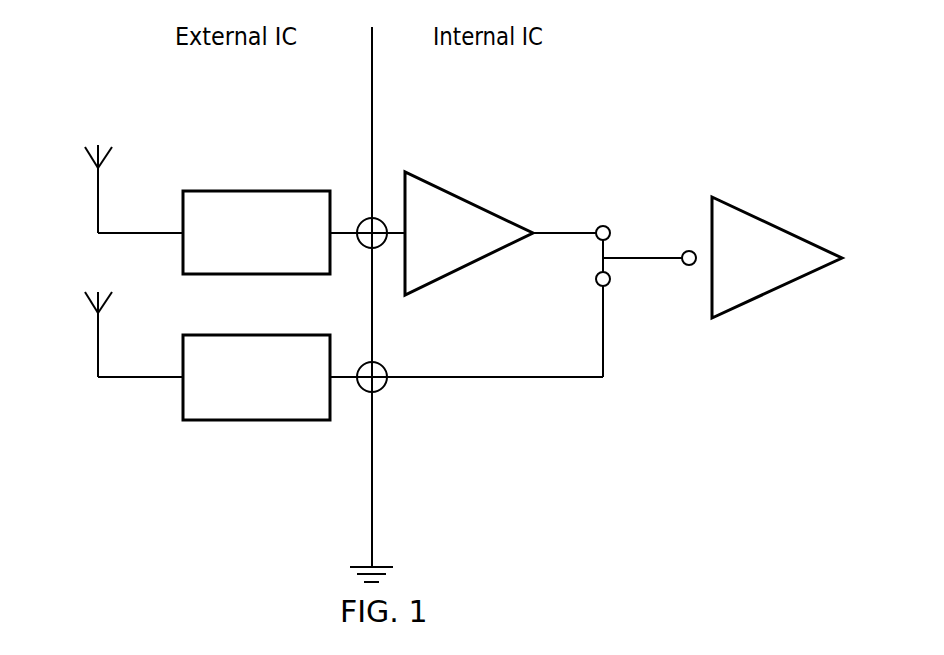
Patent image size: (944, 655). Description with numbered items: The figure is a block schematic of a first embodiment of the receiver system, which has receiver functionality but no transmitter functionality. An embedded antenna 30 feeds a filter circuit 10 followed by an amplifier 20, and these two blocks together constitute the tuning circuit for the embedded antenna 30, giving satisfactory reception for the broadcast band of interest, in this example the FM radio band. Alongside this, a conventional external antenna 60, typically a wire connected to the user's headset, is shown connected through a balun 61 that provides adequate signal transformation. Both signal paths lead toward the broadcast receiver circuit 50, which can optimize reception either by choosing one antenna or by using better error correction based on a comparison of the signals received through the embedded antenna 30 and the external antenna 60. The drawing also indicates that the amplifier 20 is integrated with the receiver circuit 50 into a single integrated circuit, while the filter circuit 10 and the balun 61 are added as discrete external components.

The filter circuit 10 is at (257, 191).
The amplifier 20 is at (468, 198).
The embedded antenna 30 is at (98, 193).
The broadcast receiver circuit 50 is at (775, 292).
The external antenna 60 is at (98, 339).
The balun 61 is at (257, 420).